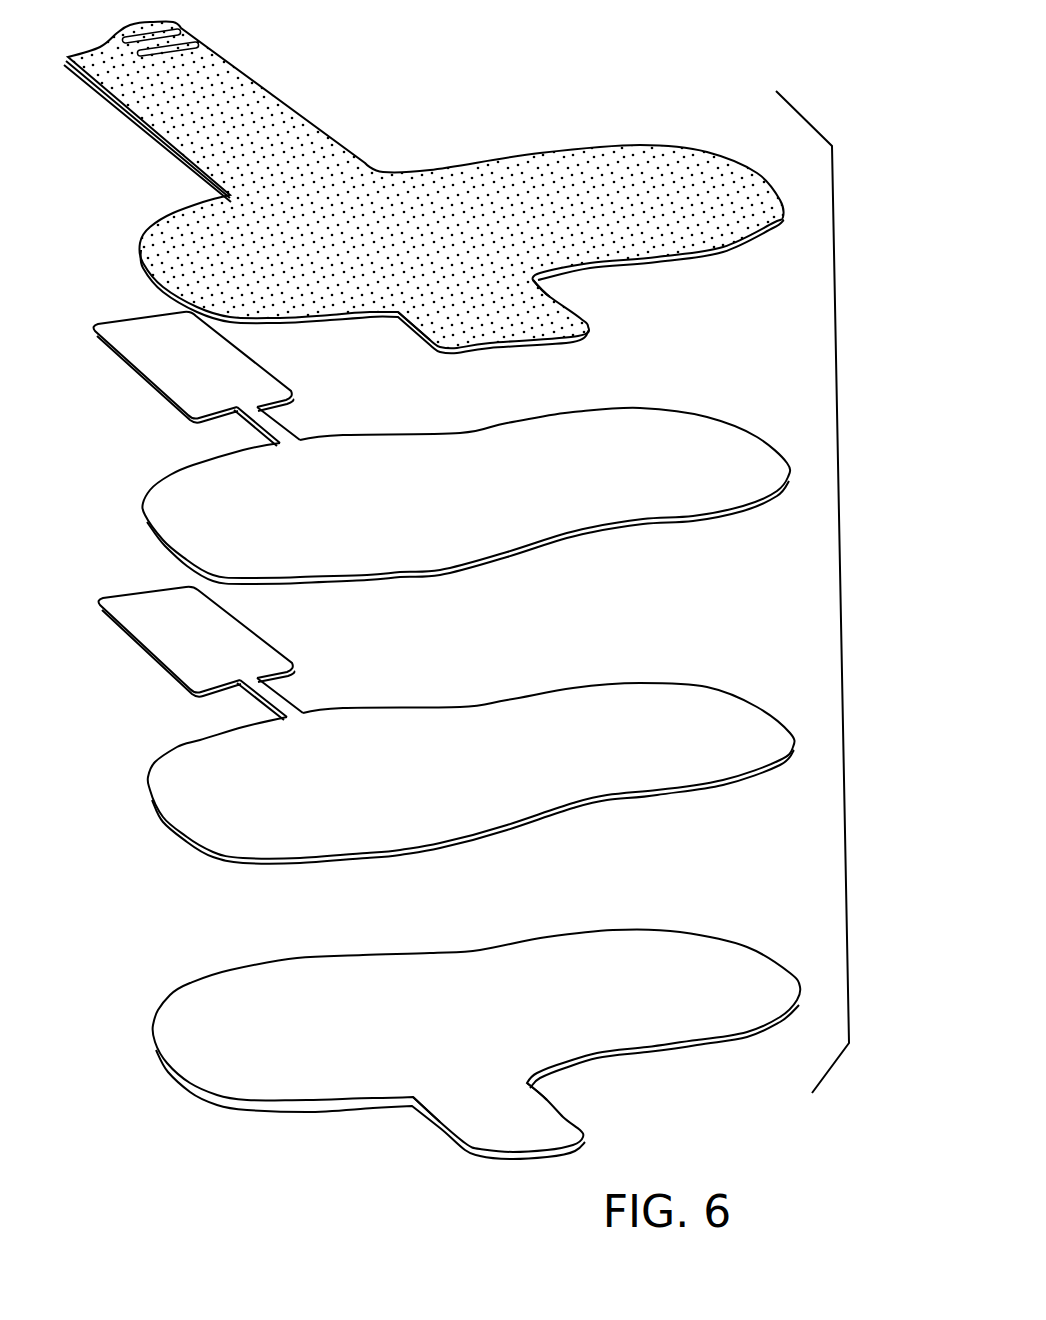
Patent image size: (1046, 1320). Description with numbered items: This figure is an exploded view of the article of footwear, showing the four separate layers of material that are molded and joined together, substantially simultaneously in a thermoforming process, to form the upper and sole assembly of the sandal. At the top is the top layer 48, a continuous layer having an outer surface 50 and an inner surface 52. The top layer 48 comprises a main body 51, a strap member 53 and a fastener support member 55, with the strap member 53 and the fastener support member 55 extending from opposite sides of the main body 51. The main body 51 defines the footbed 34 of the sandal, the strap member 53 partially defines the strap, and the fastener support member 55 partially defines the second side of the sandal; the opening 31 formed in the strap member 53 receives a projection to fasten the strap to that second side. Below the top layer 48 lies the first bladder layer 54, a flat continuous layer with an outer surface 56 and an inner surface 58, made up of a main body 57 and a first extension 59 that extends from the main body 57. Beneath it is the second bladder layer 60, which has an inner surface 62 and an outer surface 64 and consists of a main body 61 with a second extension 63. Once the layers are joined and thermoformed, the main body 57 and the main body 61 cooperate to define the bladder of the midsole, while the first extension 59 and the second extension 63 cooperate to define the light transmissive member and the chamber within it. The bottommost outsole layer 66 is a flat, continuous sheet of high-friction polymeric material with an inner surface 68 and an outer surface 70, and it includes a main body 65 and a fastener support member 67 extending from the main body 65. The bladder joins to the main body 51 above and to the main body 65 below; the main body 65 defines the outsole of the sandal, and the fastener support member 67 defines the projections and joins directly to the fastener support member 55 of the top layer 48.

The opening 31 is at (125, 35).
The footbed 34 is at (615, 200).
The top layer 48 is at (377, 158).
The outer surface 50 is at (387, 180).
The main body 51 is at (528, 203).
The inner surface 52 is at (365, 320).
The strap member 53 is at (217, 93).
The first bladder layer 54 is at (487, 462).
The fastener support member 55 is at (540, 310).
The outer surface 56 is at (402, 511).
The main body 57 is at (600, 440).
The inner surface 58 is at (375, 583).
The first extension 59 is at (183, 378).
The second bladder layer 60 is at (521, 742).
The main body 61 is at (645, 725).
The inner surface 62 is at (415, 785).
The second extension 63 is at (165, 623).
The outer surface 64 is at (367, 860).
The main body 65 is at (267, 1065).
The outsole layer 66 is at (672, 952).
The fastener support member 67 is at (530, 1118).
The inner surface 68 is at (428, 1035).
The outer surface 70 is at (410, 1105).